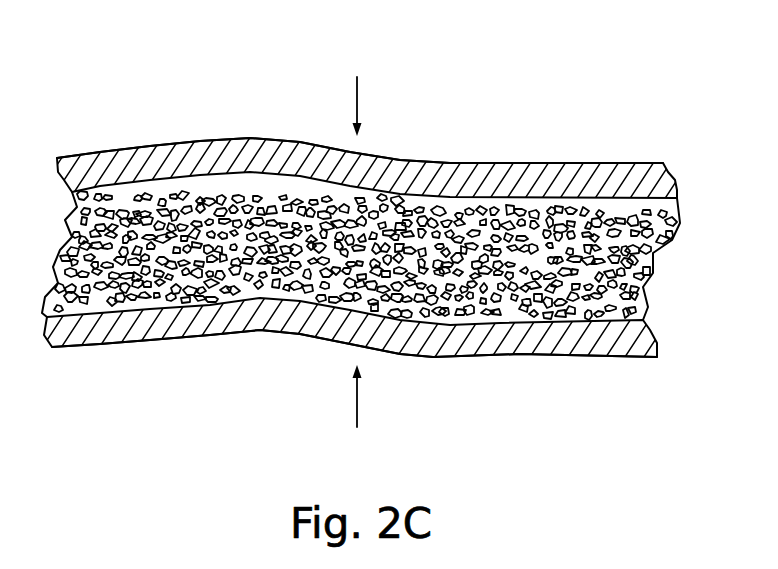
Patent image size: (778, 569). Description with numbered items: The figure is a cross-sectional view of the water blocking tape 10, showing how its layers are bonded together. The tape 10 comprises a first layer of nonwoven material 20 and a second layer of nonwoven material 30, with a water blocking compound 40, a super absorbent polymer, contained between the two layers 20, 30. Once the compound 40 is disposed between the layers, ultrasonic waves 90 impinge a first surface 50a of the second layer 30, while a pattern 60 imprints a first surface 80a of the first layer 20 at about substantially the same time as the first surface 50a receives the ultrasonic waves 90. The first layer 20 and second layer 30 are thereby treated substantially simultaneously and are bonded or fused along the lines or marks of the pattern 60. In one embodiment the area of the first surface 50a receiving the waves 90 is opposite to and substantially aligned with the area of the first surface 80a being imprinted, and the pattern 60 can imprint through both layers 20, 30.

The water blocking tape 10 is at (99, 78).
The first layer of nonwoven material 20 is at (555, 349).
The second layer of nonwoven material 30 is at (583, 164).
The water blocking compound 40 is at (235, 292).
The first surface of the second layer 50a is at (207, 130).
The pattern 60 is at (357, 412).
The first surface of the first layer 80a is at (133, 360).
The ultrasonic waves 90 is at (355, 76).